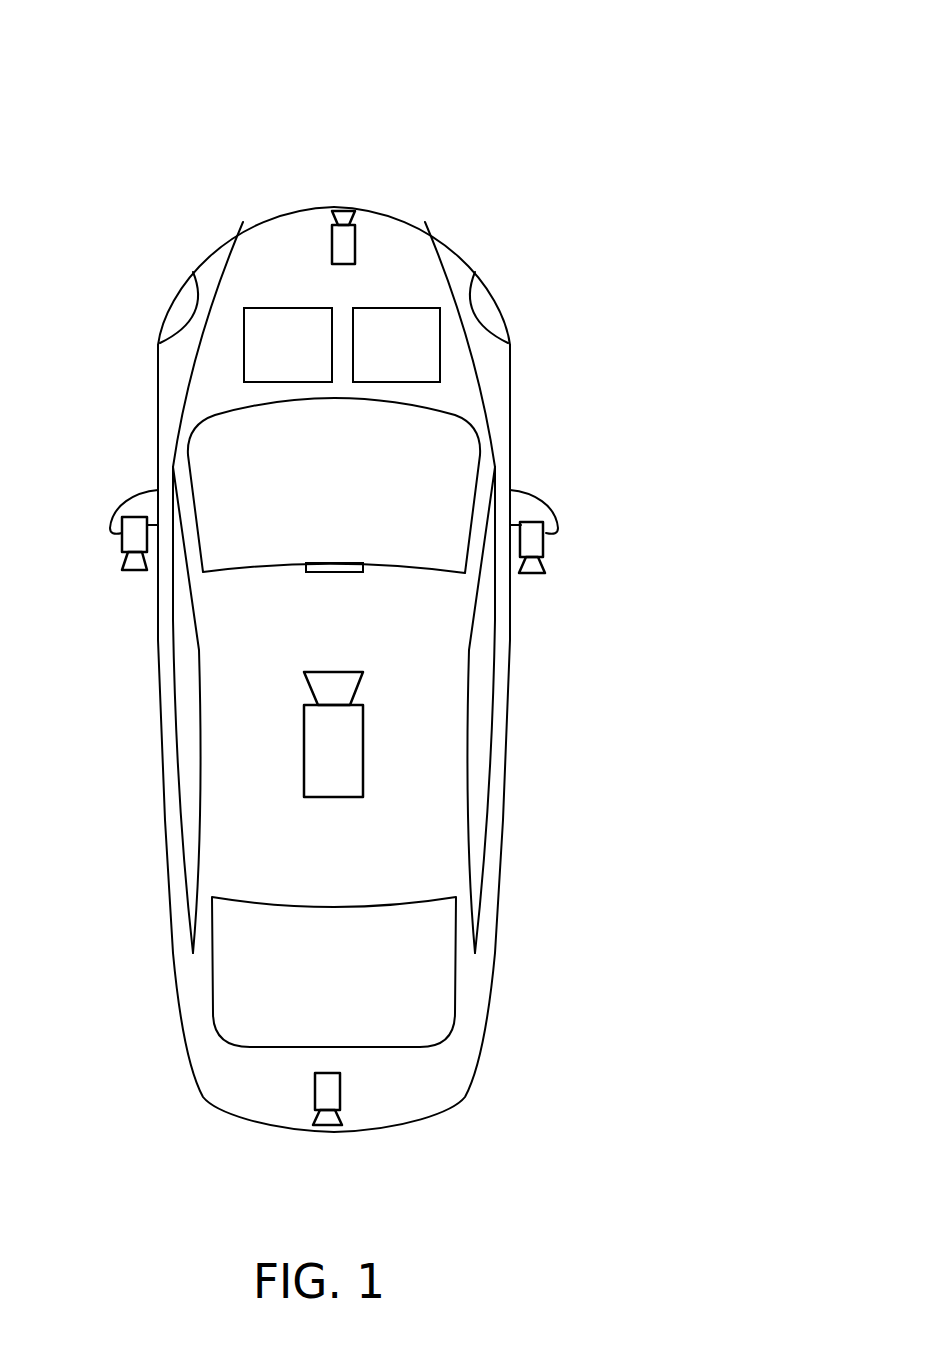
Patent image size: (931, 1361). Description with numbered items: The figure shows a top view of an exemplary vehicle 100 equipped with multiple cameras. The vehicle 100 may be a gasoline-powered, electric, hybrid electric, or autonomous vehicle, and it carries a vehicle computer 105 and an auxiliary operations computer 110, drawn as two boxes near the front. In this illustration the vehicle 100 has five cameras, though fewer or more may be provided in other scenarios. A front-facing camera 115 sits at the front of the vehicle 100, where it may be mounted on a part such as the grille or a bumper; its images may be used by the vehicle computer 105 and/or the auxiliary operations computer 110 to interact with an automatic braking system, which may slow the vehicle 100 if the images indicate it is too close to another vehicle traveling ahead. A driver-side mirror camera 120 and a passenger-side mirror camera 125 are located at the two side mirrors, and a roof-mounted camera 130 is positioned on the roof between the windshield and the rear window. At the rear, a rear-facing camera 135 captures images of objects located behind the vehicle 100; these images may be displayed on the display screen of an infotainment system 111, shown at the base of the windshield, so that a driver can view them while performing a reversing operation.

The vehicle 100 is at (675, 46).
The vehicle computer 105 is at (267, 356).
The auxiliary operations computer 110 is at (377, 356).
The infotainment system 111 is at (335, 572).
The front-facing camera 115 is at (332, 235).
The driver-side mirror camera 120 is at (122, 552).
The passenger-side mirror camera 125 is at (543, 553).
The roof-mounted camera 130 is at (304, 738).
The rear-facing camera 135 is at (340, 1105).